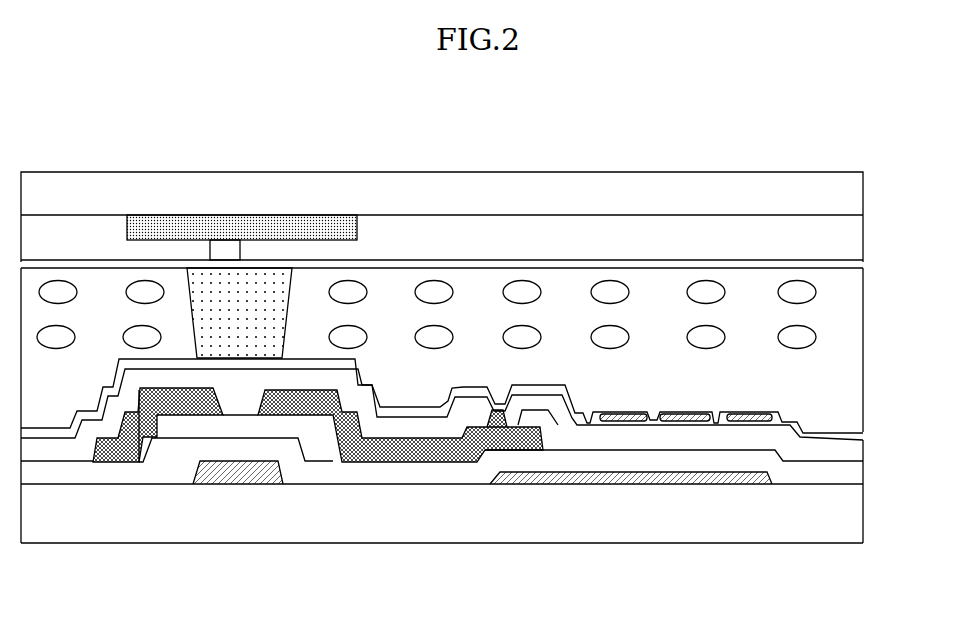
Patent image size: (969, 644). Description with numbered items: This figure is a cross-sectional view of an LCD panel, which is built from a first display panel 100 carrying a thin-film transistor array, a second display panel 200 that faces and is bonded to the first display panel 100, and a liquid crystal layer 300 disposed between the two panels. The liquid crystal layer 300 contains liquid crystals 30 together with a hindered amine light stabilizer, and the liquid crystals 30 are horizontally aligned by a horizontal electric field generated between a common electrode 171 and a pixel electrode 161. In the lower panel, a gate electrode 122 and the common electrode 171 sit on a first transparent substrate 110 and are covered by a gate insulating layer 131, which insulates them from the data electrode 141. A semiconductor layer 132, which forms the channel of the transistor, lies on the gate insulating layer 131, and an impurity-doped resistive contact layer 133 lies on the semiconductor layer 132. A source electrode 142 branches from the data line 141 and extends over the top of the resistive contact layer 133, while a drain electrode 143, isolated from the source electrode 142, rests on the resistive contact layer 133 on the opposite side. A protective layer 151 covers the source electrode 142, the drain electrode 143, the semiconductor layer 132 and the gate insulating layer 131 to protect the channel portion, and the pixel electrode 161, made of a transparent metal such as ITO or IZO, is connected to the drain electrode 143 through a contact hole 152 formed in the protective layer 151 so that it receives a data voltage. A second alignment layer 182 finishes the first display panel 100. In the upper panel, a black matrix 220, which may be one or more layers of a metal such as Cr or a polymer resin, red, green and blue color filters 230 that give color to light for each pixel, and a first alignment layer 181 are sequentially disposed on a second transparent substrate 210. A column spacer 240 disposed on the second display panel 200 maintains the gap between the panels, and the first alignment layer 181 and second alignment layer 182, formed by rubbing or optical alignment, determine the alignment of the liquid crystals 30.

The second display panel 200 is at (872, 262).
The second transparent substrate 210 is at (503, 190).
The black matrix 220 is at (293, 230).
The color filter 230 is at (393, 233).
The column spacer 240 is at (213, 278).
The first alignment layer 181 is at (640, 264).
The second alignment layer 182 is at (845, 440).
The liquid crystal layer 300 is at (872, 268).
The liquid crystals 30 is at (817, 356).
The common electrode 171 is at (583, 405).
The pixel electrode 161 is at (748, 424).
The data line 141 is at (112, 462).
The resistive contact layer 133 is at (150, 440).
The semiconductor layer 132 is at (172, 460).
The source electrode 142 is at (196, 440).
The gate electrode 122 is at (248, 476).
The gate insulating layer 131 is at (300, 452).
The drain electrode 143 is at (400, 458).
The first transparent substrate 110 is at (455, 530).
The contact hole 152 is at (508, 450).
The protective layer 151 is at (806, 452).
The first display panel 100 is at (872, 440).